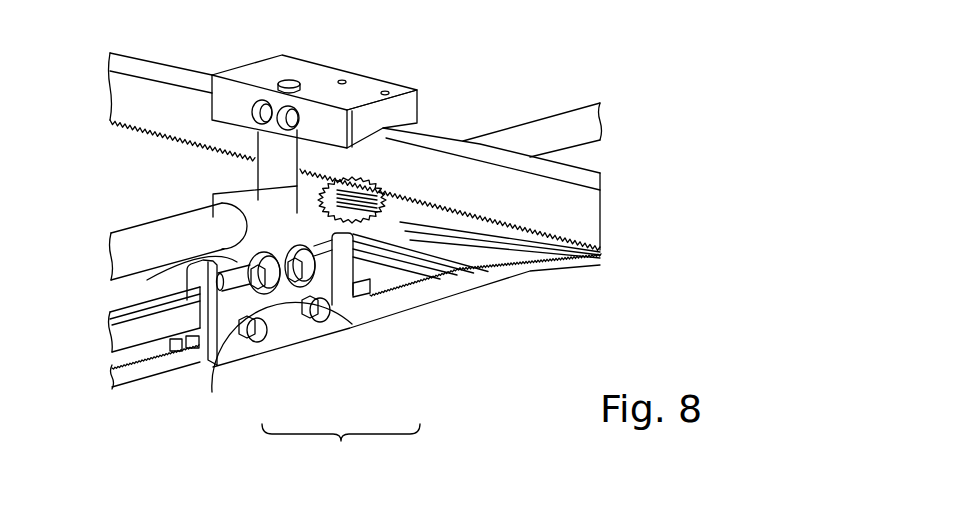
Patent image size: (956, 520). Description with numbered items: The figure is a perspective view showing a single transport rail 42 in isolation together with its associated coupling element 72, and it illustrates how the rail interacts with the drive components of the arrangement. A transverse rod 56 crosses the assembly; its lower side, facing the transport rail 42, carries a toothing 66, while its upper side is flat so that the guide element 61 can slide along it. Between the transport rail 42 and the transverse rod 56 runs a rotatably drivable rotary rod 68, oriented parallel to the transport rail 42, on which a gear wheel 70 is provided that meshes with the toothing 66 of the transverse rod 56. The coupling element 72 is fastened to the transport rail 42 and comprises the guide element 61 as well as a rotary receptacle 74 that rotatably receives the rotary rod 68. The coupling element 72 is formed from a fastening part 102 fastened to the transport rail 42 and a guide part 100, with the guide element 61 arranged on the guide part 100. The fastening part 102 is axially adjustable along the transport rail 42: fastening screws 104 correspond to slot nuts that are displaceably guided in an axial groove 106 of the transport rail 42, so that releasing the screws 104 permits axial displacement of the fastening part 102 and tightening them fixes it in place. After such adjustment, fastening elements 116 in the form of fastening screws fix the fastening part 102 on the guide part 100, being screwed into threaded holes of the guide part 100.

The transport rail 42 is at (133, 337).
The transverse rod 56 is at (557, 220).
The guide element 61 is at (372, 133).
The toothing 66 is at (500, 223).
The rotary rod 68 is at (111, 255).
The gear wheel 70 is at (348, 180).
The coupling element 72 is at (341, 447).
The rotary receptacle 74 is at (221, 202).
The guide part 100 is at (300, 212).
The fastening part 102 is at (287, 323).
The fastening screw 104 is at (217, 320).
The axial groove 106 is at (157, 352).
The fastening element 116 is at (296, 245).